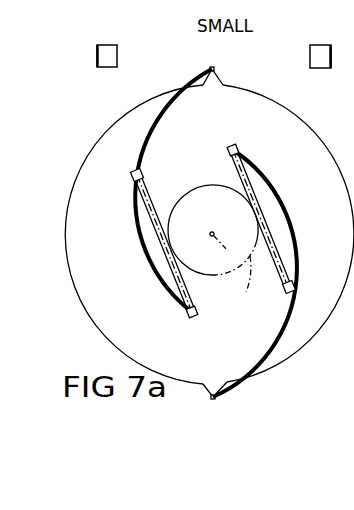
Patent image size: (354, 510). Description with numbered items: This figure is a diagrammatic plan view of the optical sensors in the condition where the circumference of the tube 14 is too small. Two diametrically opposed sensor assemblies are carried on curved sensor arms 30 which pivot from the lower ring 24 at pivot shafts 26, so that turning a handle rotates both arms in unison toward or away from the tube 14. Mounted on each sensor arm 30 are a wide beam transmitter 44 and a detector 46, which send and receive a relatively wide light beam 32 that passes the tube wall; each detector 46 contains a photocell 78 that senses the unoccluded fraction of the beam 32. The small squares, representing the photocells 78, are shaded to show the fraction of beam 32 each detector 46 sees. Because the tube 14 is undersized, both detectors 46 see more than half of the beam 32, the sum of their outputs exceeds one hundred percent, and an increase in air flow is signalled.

The tube 14 is at (213, 249).
The lower ring 24 is at (115, 120).
The pivot shafts 26 is at (216, 69).
The sensor arms 30 is at (146, 256).
The light beams 32 is at (176, 280).
The wide beam transmitter 44 is at (130, 173).
The detector 46 is at (187, 318).
The photocell 78 is at (122, 53).